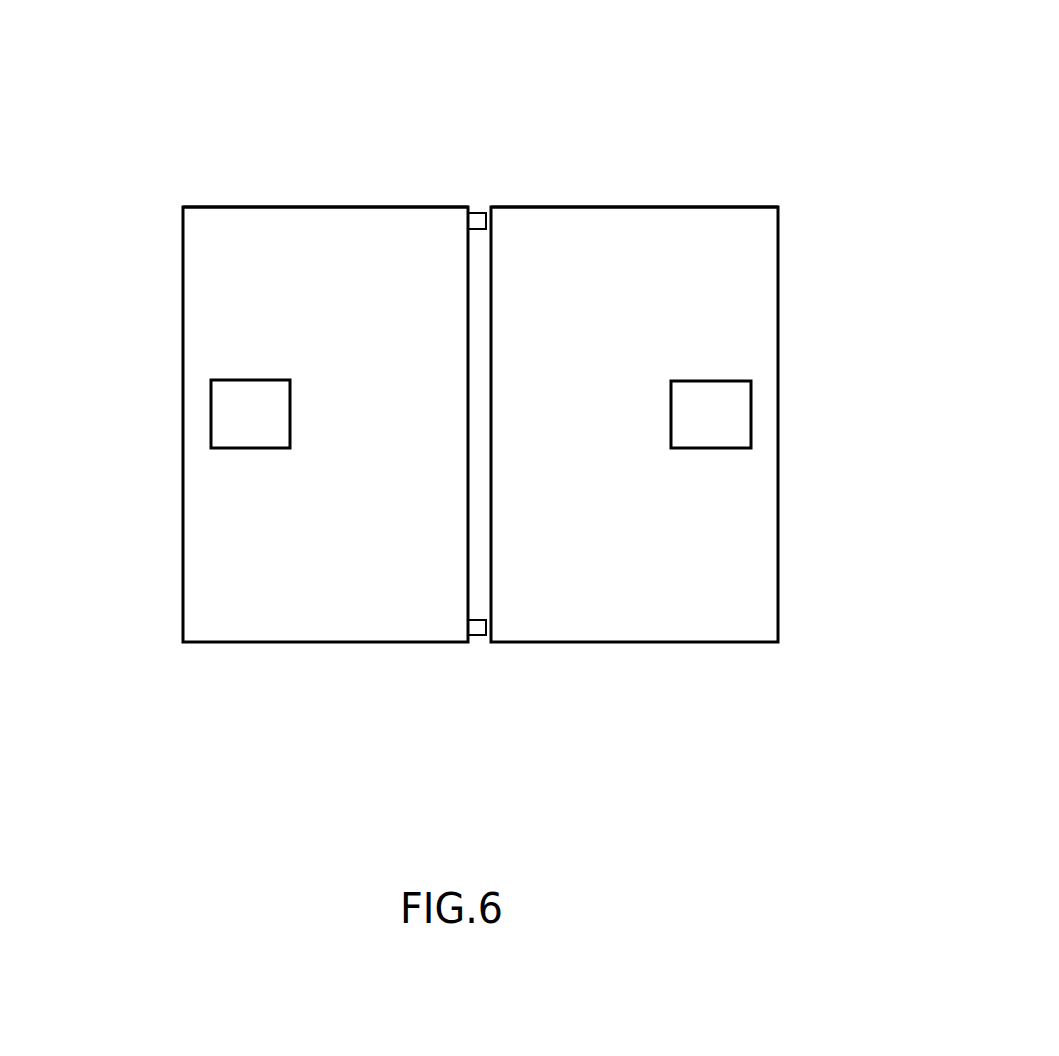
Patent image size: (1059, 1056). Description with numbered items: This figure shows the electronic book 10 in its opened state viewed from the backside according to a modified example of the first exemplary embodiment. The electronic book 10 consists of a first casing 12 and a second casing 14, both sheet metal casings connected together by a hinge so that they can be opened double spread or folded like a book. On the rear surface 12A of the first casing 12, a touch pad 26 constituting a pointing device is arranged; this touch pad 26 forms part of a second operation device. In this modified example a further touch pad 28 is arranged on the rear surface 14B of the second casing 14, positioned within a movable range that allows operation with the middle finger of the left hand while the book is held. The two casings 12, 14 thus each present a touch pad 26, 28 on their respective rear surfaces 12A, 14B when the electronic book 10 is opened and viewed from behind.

The electronic book 10 is at (548, 98).
The first casing 12 is at (627, 669).
The rear surface of the first casing 12A is at (645, 225).
The second casing 14 is at (300, 669).
The second casing surface 14B is at (307, 225).
The touch pad 26 is at (735, 448).
The touch pad 28 is at (225, 448).